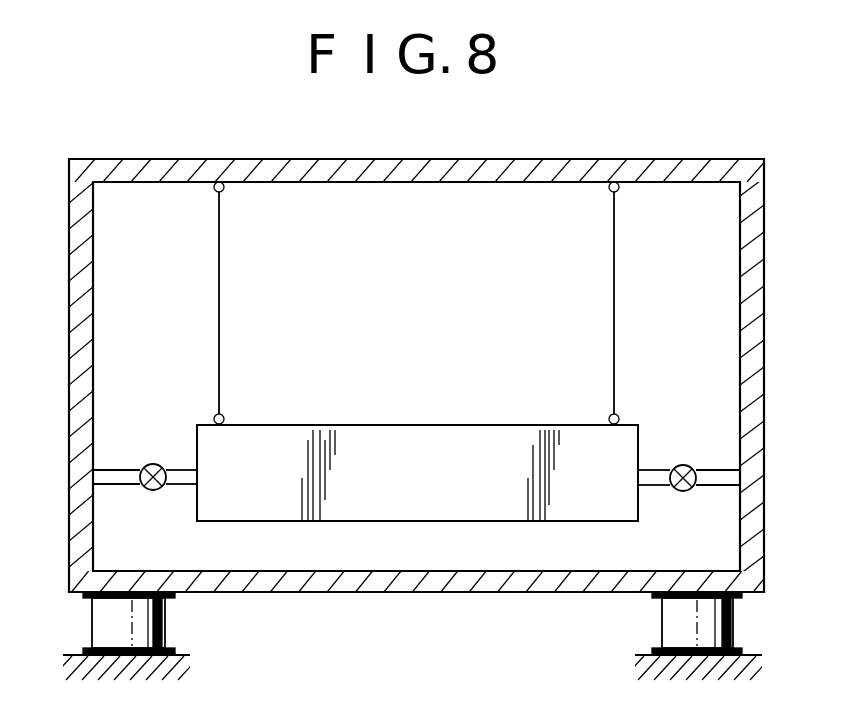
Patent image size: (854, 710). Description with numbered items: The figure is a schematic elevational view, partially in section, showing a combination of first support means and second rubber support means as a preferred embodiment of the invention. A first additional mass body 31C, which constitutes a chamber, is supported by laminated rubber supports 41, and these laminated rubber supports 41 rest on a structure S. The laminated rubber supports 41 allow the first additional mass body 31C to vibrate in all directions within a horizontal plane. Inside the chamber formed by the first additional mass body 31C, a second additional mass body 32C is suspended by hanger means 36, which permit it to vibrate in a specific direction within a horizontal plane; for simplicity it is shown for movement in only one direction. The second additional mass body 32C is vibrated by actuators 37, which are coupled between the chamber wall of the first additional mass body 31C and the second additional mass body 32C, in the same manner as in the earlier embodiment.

The first additional mass body 31C is at (441, 166).
The second additional mass body 32C is at (434, 440).
The hanger means 36 is at (221, 279).
The actuators 37 is at (154, 463).
The laminated rubber supports 41 is at (165, 635).
The structure S is at (68, 653).